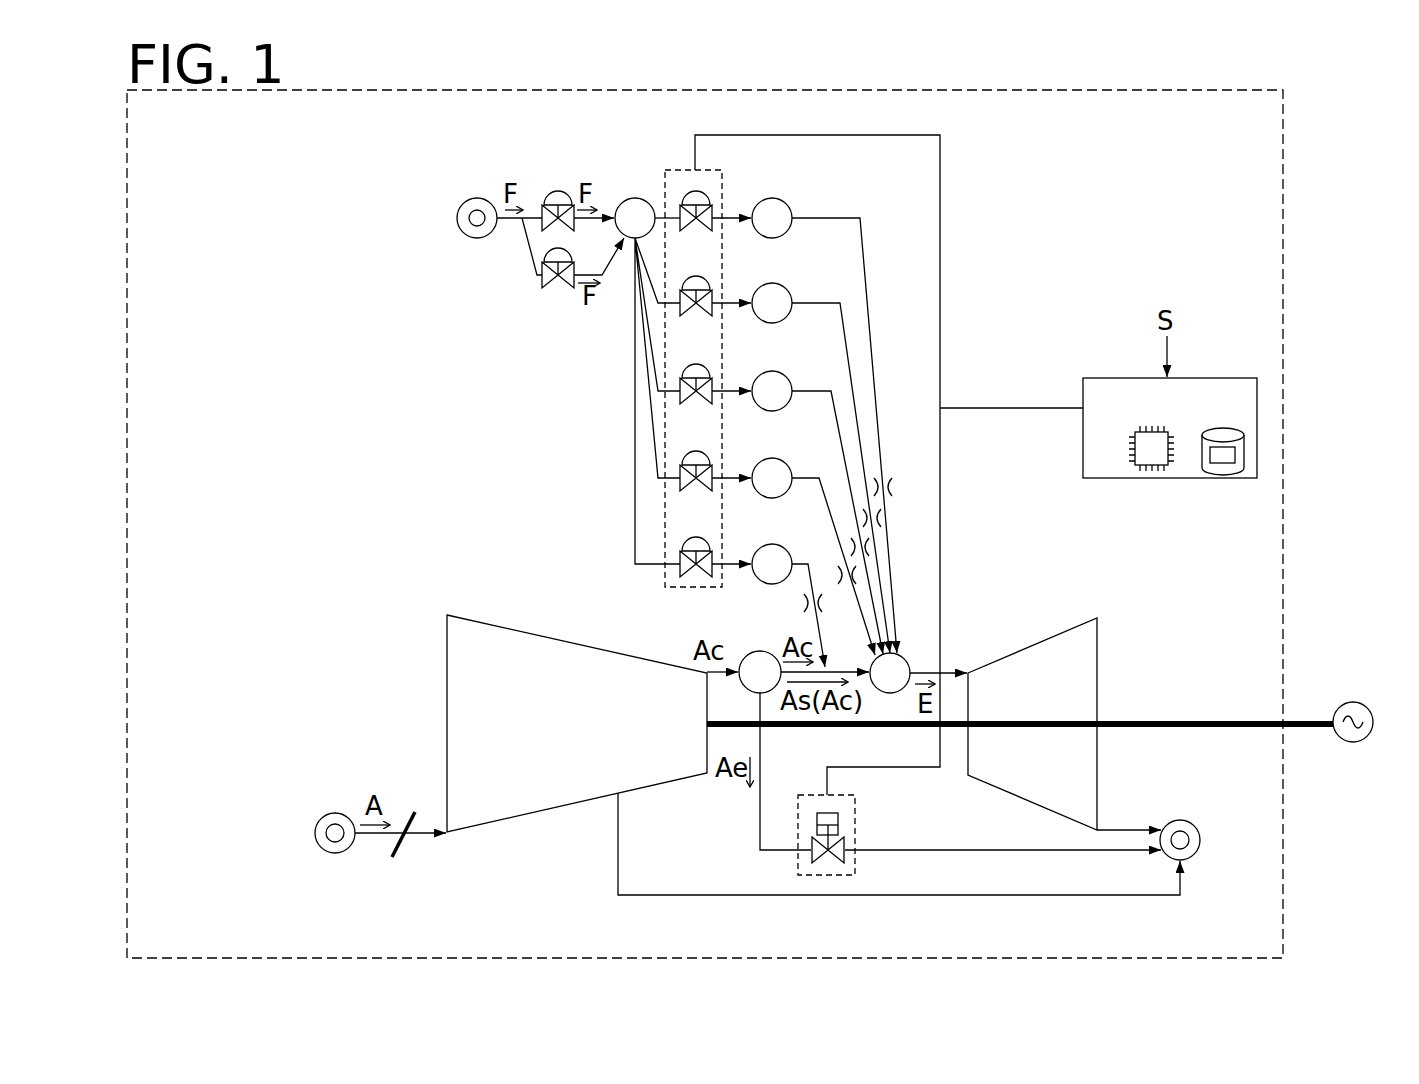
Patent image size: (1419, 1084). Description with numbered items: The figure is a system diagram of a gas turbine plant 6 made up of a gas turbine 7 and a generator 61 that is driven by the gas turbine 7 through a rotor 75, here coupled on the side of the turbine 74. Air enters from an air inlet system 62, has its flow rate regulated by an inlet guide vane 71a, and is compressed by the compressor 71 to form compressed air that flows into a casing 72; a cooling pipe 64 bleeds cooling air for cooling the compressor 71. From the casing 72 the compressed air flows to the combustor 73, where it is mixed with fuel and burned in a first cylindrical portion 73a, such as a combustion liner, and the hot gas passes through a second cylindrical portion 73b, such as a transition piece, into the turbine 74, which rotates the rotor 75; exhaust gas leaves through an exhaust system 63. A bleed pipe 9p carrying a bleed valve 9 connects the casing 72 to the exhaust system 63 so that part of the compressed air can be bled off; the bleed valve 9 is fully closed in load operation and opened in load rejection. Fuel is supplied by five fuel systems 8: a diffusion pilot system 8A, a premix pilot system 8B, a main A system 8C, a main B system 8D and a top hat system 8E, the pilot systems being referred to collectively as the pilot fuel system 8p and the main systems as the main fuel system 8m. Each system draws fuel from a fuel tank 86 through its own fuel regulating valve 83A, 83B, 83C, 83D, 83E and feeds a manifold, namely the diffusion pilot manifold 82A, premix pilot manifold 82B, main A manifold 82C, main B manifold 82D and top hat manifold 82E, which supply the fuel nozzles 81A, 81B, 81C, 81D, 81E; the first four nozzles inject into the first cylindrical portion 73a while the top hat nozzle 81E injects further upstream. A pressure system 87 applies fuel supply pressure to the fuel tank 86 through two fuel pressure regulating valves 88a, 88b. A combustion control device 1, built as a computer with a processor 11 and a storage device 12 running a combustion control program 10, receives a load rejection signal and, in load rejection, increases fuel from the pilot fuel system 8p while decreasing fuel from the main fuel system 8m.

The combustion control device 1 is at (1212, 378).
The gas turbine plant 6 is at (1324, 116).
The gas turbine 7 is at (1283, 210).
The fuel system 8 is at (907, 414).
The diffusion pilot system 8A is at (864, 231).
The premix pilot system 8B is at (845, 314).
The main A system 8C is at (838, 406).
The main B system 8D is at (827, 489).
The top hat system 8E is at (815, 578).
The pilot fuel system 8p is at (1020, 163).
The main fuel system 8m is at (1020, 297).
The bleed valve 9 is at (838, 815).
The bleed pipe 9p is at (760, 822).
The combustion control program 10 is at (1225, 463).
The processor 11 is at (1148, 471).
The storage device 12 is at (1215, 475).
The generator 61 is at (1353, 702).
The air inlet system 62 is at (342, 852).
The exhaust system 63 is at (1180, 820).
The cooling pipe 64 is at (617, 857).
The compressor 71 is at (510, 629).
The inlet guide vane 71a is at (405, 847).
The casing 72 is at (749, 659).
The combustor 73 is at (1054, 607).
The first cylindrical portion 73a is at (904, 659).
The second cylindrical portion 73b is at (948, 672).
The turbine 74 is at (1097, 650).
The rotor 75 is at (797, 730).
The fuel nozzle 81A is at (894, 487).
The fuel nozzle 81B is at (883, 518).
The fuel nozzle 81C is at (871, 547).
The fuel nozzle 81D is at (858, 575).
The fuel nozzle 81E is at (824, 603).
The diffusion pilot manifold 82A is at (773, 197).
The premix pilot manifold 82B is at (780, 283).
The main A manifold 82C is at (773, 371).
The main B manifold 82D is at (800, 446).
The top hat manifold 82E is at (785, 532).
The fuel regulating valve 83A is at (700, 189).
The fuel regulating valve 83B is at (703, 279).
The fuel regulating valve 83C is at (687, 365).
The fuel regulating valve 83D is at (687, 451).
The fuel regulating valve 83E is at (687, 538).
The fuel tank 86 is at (623, 201).
The pressure system 87 is at (461, 233).
The fuel pressure regulating valve 88a is at (548, 193).
The fuel pressure regulating valve 88b is at (557, 288).